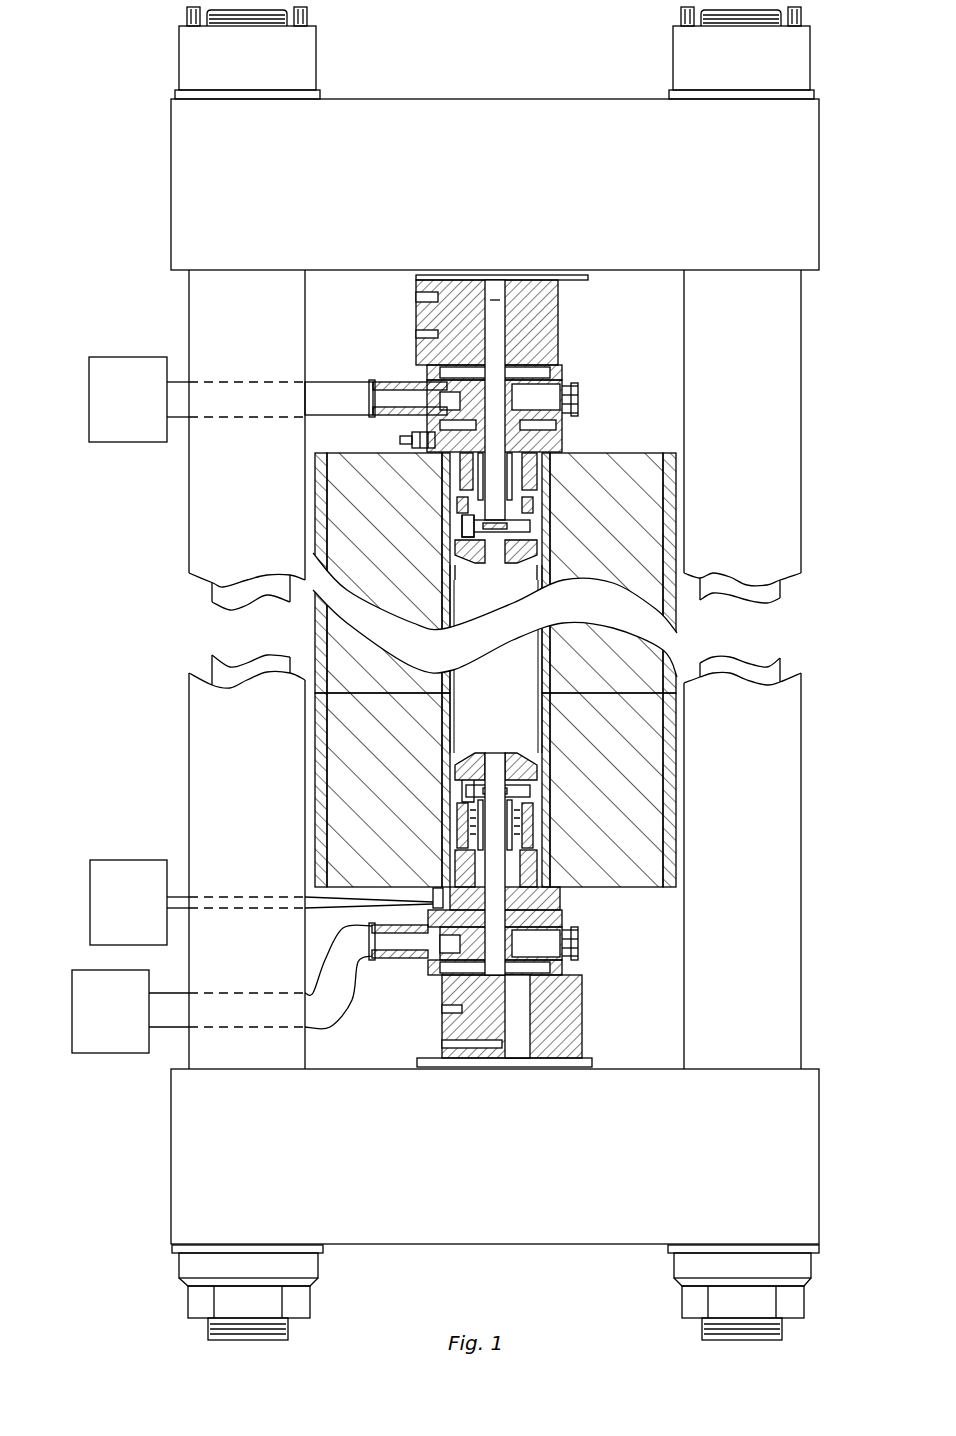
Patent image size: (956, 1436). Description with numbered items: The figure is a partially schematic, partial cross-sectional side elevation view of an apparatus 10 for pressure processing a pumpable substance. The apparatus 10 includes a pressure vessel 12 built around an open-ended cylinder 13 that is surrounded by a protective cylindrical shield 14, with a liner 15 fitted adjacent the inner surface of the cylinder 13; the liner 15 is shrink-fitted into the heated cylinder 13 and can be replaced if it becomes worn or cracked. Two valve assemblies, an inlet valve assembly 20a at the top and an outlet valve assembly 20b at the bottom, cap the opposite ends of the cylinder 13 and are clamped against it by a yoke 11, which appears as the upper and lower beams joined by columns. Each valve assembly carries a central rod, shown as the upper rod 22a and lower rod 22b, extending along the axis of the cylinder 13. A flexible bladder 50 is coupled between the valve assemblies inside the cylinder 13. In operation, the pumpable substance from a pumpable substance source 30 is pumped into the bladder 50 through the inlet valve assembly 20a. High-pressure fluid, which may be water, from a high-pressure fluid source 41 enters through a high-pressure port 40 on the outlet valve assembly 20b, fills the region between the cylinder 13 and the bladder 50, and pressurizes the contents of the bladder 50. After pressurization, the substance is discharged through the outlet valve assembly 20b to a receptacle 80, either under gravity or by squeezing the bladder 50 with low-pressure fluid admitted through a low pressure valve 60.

The apparatus 10 is at (140, 516).
The yoke 11 is at (171, 228).
The pressure vessel 12 is at (361, 914).
The open-ended cylinder 13 is at (316, 480).
The protective cylindrical shield 14 is at (489, 790).
The liner 15 is at (446, 630).
The inlet valve assembly 20a is at (582, 337).
The outlet valve assembly 20b is at (600, 937).
The upper rod 22a is at (495, 325).
The lower rod 22b is at (500, 915).
The pumpable substance source 30 is at (132, 357).
The high-pressure port 40 is at (312, 896).
The high-pressure fluid source 41 is at (130, 860).
The flexible bladder 50 is at (528, 708).
The low pressure valve 60 is at (390, 441).
The receptacle 80 is at (112, 1055).